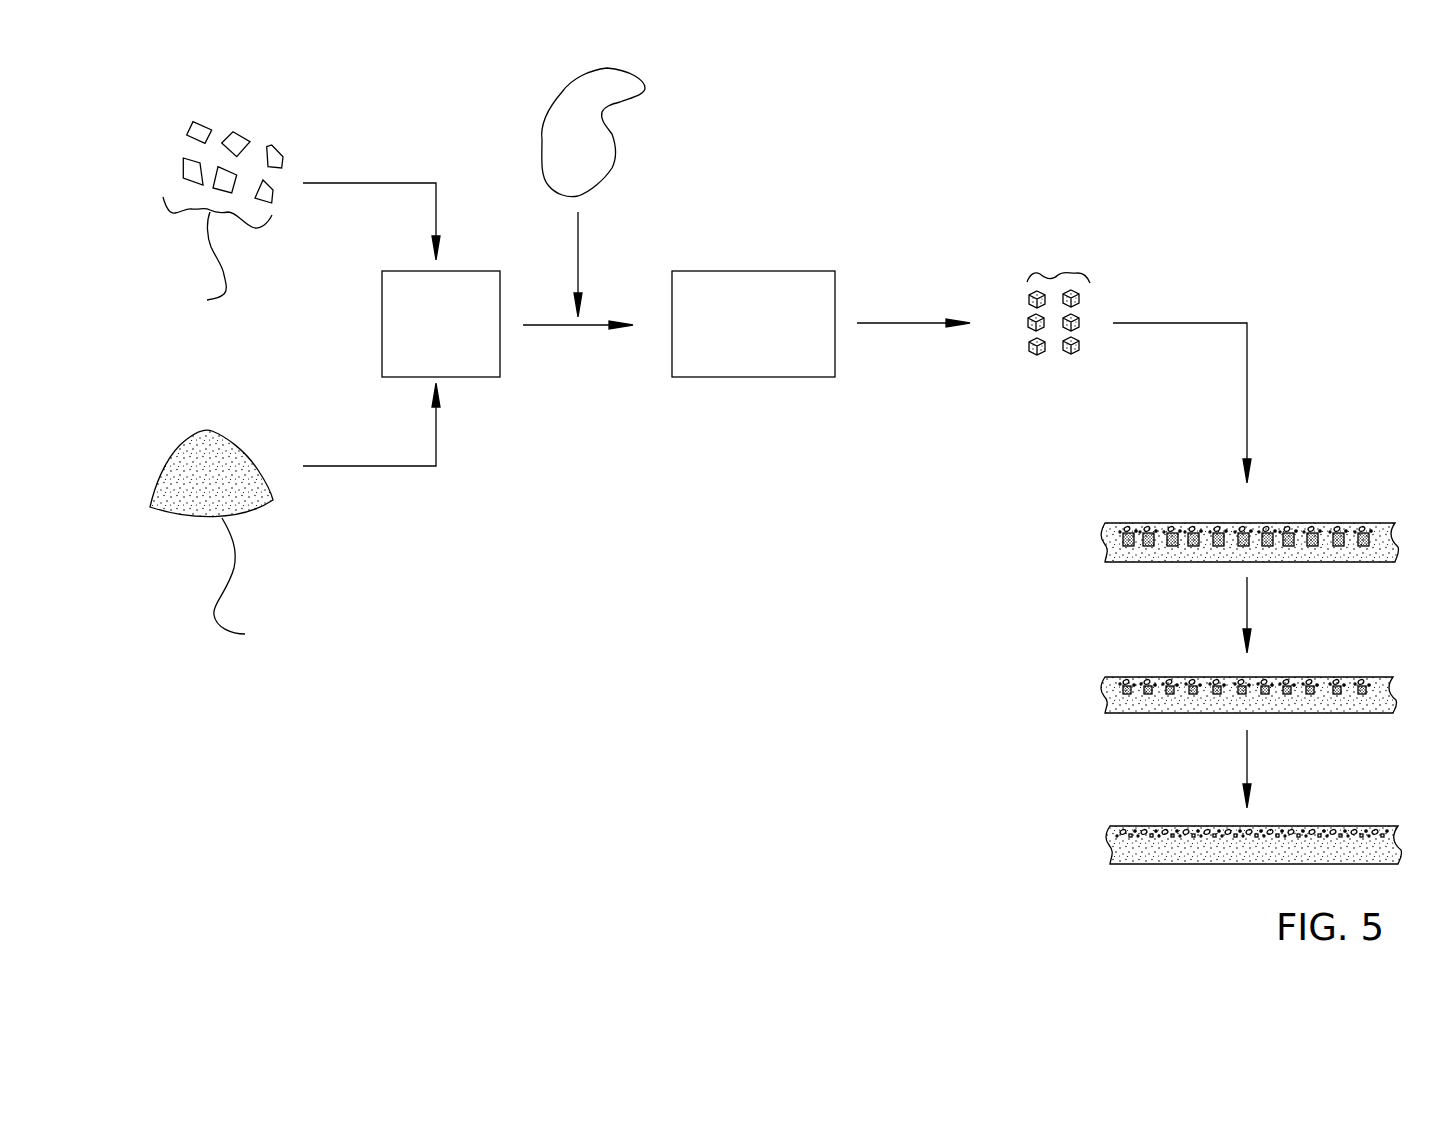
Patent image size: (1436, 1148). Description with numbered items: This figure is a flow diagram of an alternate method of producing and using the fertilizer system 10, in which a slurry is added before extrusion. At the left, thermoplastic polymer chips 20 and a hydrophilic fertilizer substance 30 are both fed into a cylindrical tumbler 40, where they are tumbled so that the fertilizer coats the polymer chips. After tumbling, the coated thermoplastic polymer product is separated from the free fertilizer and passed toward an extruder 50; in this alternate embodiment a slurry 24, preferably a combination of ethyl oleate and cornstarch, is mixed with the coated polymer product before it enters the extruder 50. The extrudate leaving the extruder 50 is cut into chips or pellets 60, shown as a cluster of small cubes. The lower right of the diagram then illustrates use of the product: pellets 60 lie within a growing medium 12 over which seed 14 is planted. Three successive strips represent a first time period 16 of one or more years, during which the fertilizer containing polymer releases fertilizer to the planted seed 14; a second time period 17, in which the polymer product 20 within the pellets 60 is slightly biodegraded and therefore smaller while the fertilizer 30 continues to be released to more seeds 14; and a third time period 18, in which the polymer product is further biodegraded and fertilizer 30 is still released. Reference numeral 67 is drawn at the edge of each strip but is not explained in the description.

The fertilizer system 10 is at (1228, 167).
The growing medium 12 is at (1187, 530).
The seed 14 is at (1150, 528).
The first time period 16 is at (1062, 498).
The second time period 17 is at (1033, 667).
The third time period 18 is at (1047, 827).
The thermoplastic polymer chips 20 is at (223, 221).
The slurry 24 is at (616, 93).
The hydrophilic fertilizer substance 30 is at (245, 634).
The cylindrical tumbler 40 is at (420, 343).
The extruder 50 is at (733, 342).
The fertilizer containing polymer pellets 60 is at (1058, 273).
The composite layer 67 is at (1122, 533).